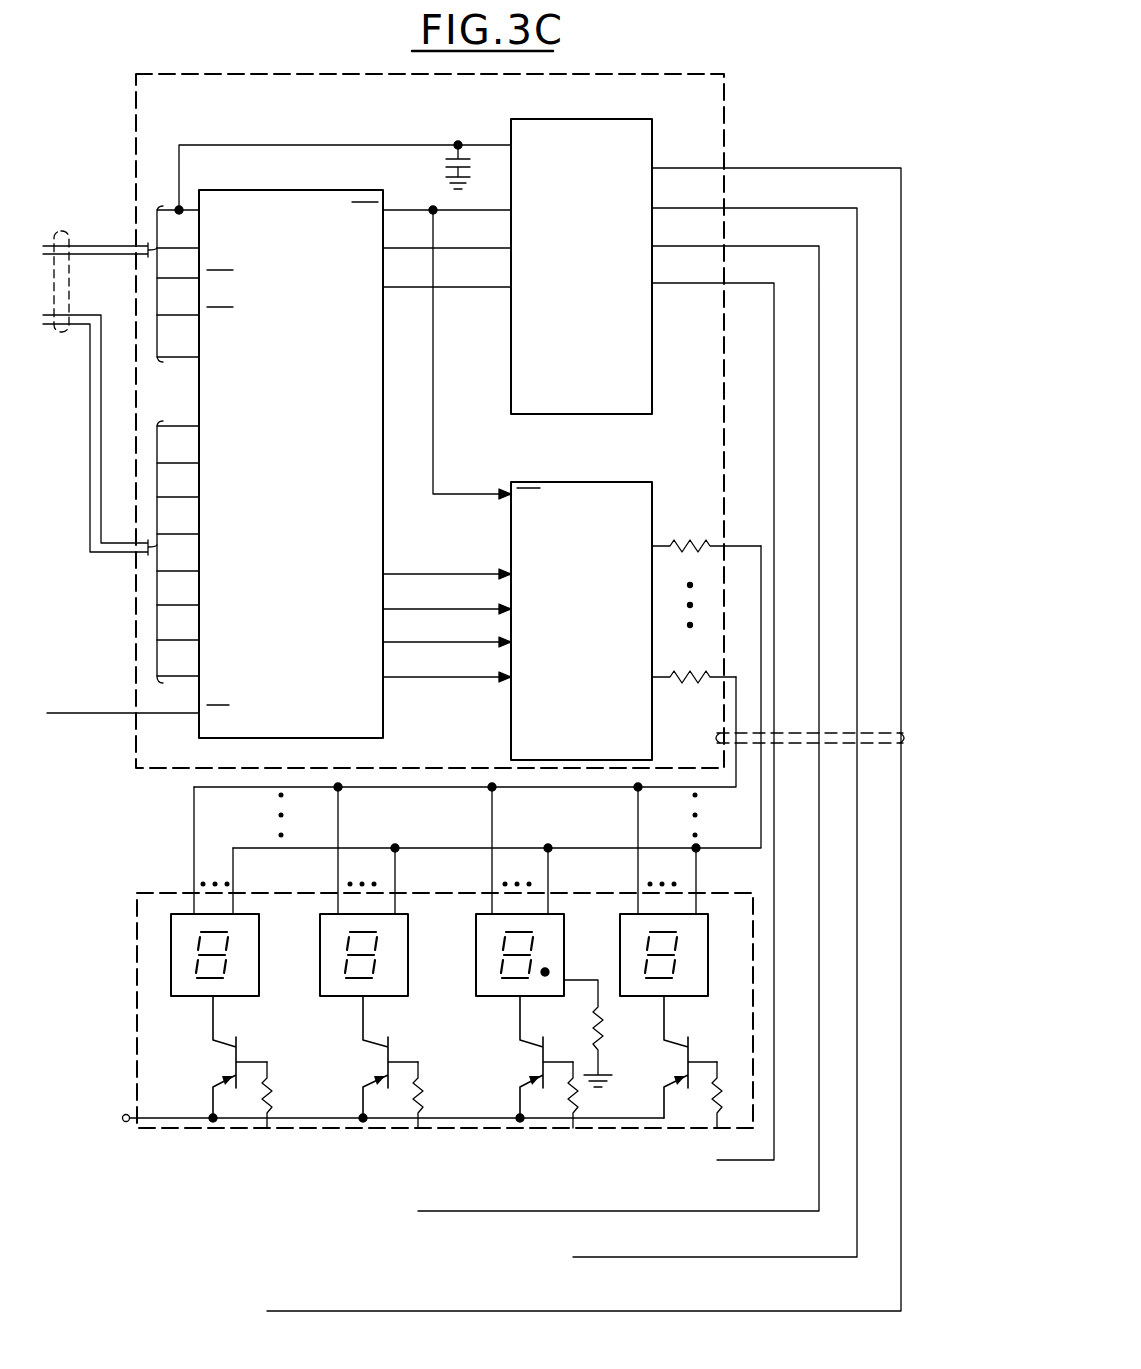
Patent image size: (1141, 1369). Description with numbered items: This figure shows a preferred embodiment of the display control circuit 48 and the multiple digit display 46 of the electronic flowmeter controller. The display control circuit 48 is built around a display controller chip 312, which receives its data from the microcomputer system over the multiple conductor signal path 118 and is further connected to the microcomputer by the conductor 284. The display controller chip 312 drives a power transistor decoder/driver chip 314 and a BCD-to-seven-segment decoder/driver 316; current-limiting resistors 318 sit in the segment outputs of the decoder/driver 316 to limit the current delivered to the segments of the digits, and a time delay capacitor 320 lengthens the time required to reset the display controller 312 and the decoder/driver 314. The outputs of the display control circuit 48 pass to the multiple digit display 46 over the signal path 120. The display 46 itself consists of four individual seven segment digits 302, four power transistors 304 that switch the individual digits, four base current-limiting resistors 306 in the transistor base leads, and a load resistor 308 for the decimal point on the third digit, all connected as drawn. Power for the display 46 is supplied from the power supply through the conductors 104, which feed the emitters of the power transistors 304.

The display control circuit 48 is at (730, 121).
The display controller chip 312 is at (385, 529).
The power transistor decoder/driver chip 314 is at (597, 118).
The BCD-to-seven-segment decoder/driver 316 is at (568, 482).
The current-limiting resistors 318 is at (694, 496).
The time delay capacitor 320 is at (466, 153).
The signal path 118 is at (60, 232).
The conductor 284 is at (93, 712).
The signal path 120 is at (903, 739).
The multiple digit display 46 is at (158, 884).
The seven segment digits 302 is at (320, 948).
The power transistors 304 is at (215, 1048).
The base current-limiting resistors 306 is at (270, 1082).
The load resistor 308 is at (592, 1026).
The conductors 104 is at (188, 1122).